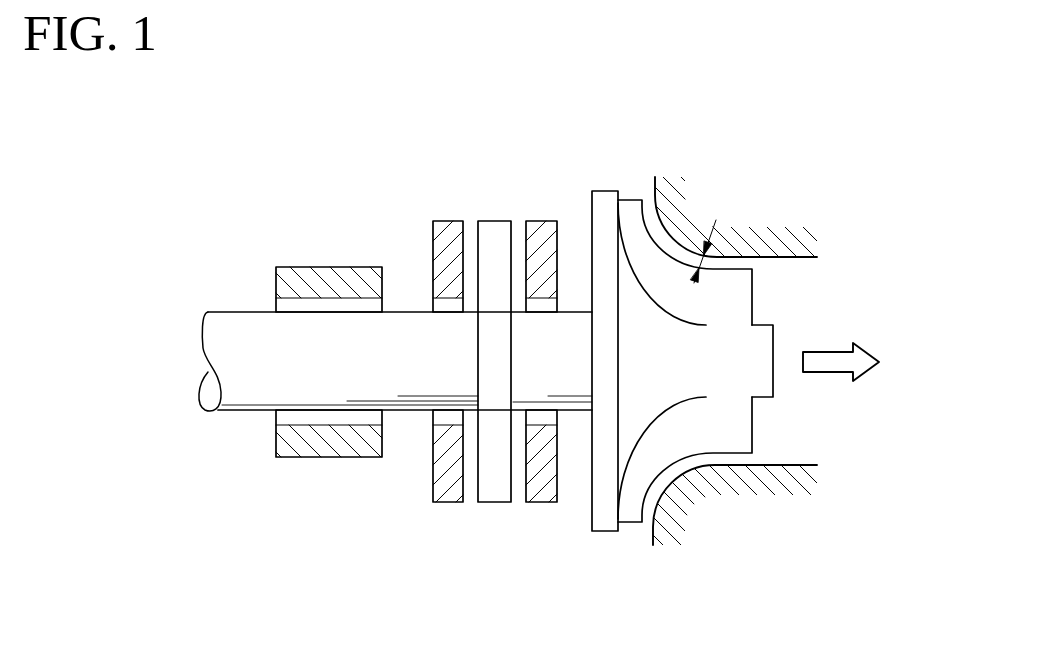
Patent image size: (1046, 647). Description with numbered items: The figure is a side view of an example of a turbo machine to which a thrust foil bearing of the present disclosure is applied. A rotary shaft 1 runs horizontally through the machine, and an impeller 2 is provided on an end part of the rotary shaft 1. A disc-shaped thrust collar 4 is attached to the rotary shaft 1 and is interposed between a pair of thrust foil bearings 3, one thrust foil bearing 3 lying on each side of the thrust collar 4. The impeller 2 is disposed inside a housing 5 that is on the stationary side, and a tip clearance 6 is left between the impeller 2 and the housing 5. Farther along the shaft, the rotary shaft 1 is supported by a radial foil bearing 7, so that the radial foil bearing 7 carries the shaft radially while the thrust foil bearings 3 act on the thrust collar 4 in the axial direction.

The rotary shaft 1 is at (235, 318).
The impeller 2 is at (650, 258).
The thrust foil bearing 3 is at (447, 233).
The thrust collar 4 is at (497, 235).
The housing 5 is at (683, 223).
The tip clearance 6 is at (722, 262).
The radial foil bearing 7 is at (328, 280).